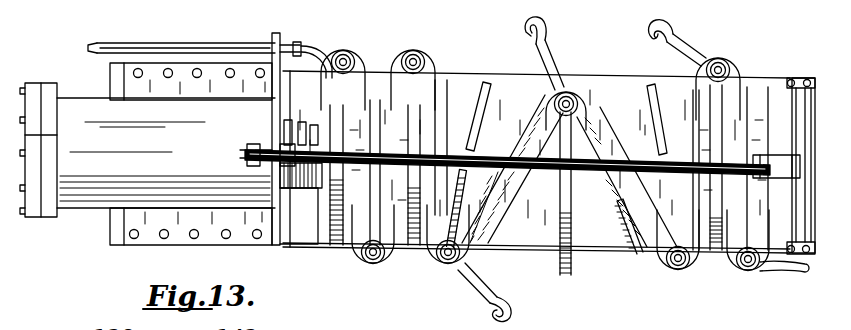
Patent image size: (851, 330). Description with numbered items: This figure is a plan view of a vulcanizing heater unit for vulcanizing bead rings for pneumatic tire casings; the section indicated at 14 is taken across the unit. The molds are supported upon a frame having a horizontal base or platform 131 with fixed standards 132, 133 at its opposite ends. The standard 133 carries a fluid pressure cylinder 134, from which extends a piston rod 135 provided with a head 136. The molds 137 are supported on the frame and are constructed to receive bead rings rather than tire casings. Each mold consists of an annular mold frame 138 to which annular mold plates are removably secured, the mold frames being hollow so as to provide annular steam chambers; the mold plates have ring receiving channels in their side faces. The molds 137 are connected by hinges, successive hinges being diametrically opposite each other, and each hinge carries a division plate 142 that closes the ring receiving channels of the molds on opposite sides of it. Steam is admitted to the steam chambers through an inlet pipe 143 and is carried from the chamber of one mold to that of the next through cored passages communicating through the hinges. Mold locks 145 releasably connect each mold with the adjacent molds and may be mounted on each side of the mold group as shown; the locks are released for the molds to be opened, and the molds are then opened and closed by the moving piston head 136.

The section line 14 is at (413, 56).
The horizontal base or platform 131 is at (603, 248).
The fixed standard 132 is at (803, 80).
The fixed standard 133 is at (268, 245).
The fluid pressure cylinder 134 is at (88, 194).
The piston rod 135 is at (320, 172).
The head 136 is at (315, 37).
The mold 137 is at (640, 258).
The annular mold frame 138 is at (440, 107).
The division plate 142 is at (650, 86).
The inlet pipe 143 is at (785, 275).
The mold lock 145 is at (645, 32).